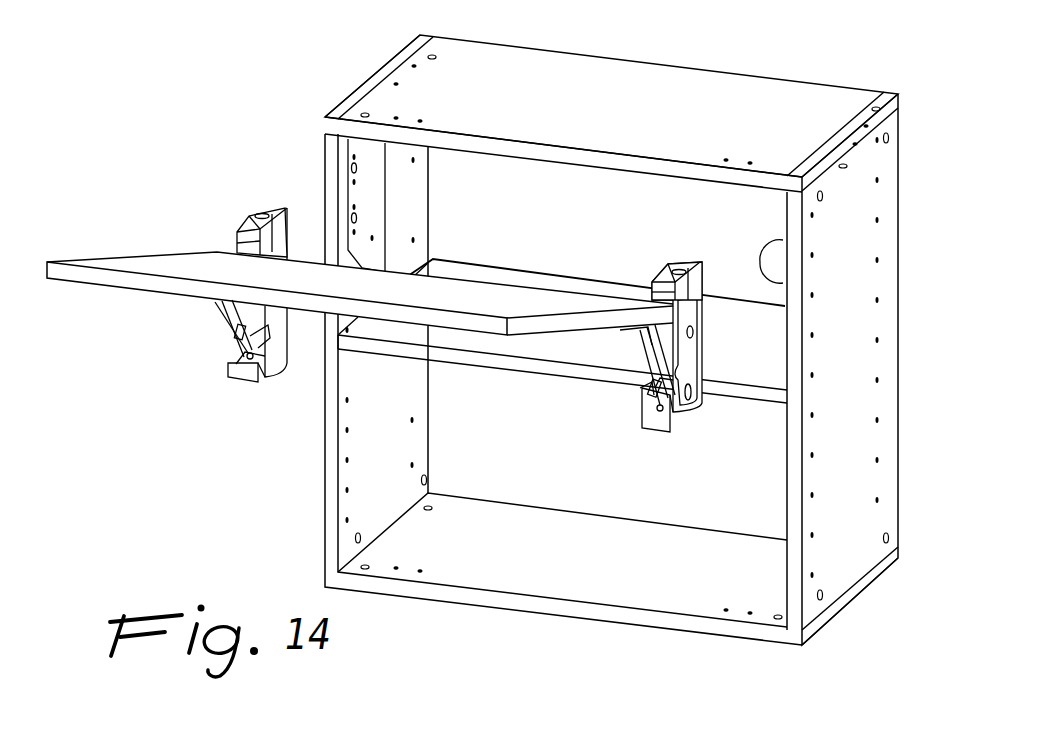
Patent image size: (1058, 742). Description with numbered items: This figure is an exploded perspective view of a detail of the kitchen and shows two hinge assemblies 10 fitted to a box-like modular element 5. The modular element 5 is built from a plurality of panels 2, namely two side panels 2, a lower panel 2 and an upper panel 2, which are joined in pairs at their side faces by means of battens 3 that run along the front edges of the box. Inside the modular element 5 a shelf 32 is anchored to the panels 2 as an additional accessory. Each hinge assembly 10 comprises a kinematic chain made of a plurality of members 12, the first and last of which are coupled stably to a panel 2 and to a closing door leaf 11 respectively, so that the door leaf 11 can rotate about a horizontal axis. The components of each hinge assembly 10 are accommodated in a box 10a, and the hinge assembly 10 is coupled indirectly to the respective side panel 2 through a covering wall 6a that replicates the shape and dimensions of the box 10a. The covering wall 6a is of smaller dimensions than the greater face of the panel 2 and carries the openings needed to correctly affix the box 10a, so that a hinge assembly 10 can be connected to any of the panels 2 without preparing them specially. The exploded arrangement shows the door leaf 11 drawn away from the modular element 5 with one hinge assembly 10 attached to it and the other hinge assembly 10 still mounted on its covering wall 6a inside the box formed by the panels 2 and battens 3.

The panel 2 is at (683, 118).
The batten 3 is at (368, 82).
The modular element 5 is at (765, 64).
The covering wall 6a is at (368, 194).
The hinge assembly 10 is at (242, 384).
The box 10a is at (280, 230).
The door leaf 11 is at (165, 262).
The member 12 is at (230, 313).
The shelf 32 is at (760, 348).